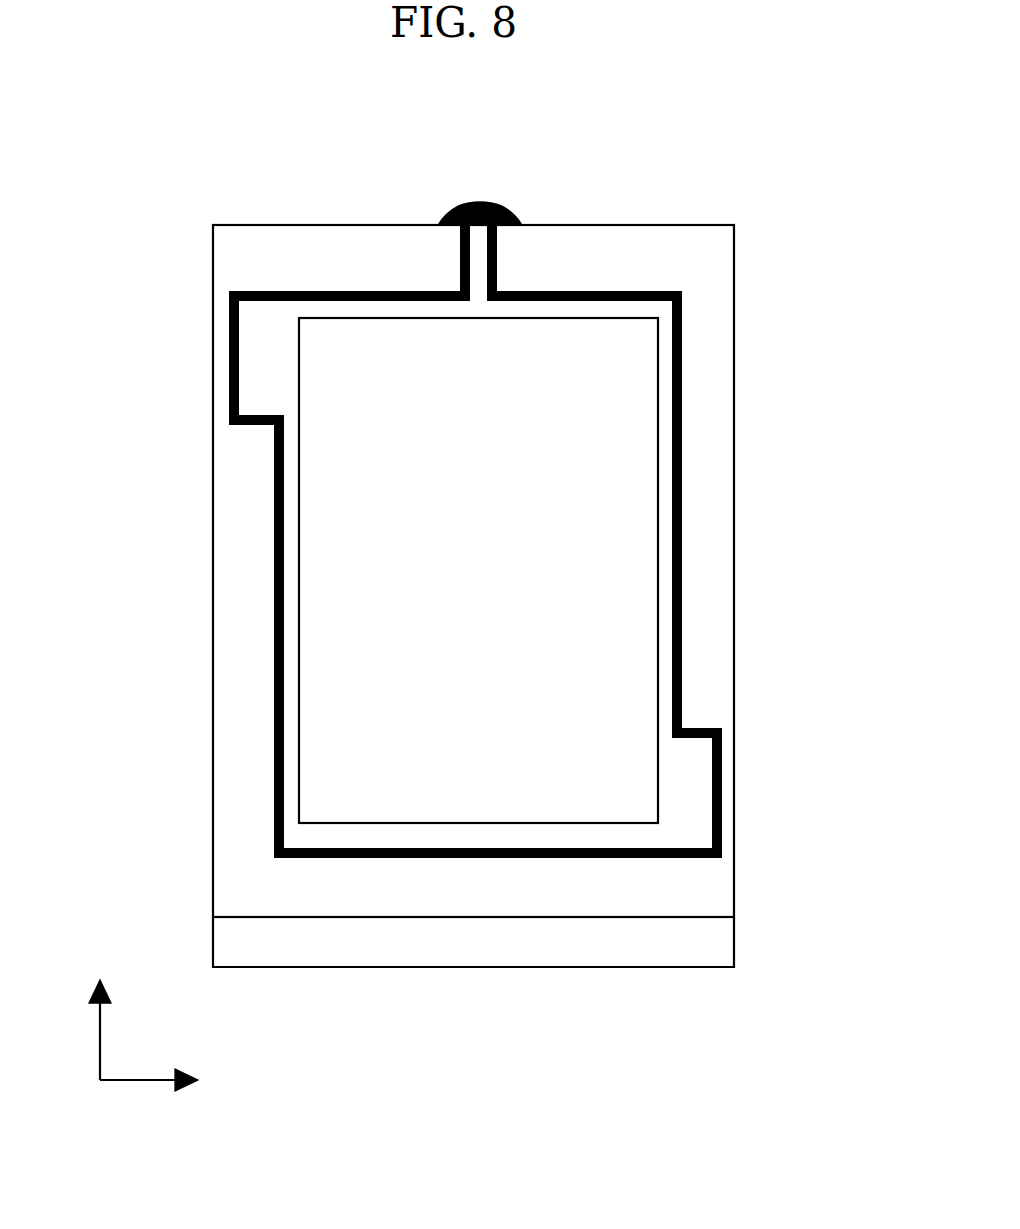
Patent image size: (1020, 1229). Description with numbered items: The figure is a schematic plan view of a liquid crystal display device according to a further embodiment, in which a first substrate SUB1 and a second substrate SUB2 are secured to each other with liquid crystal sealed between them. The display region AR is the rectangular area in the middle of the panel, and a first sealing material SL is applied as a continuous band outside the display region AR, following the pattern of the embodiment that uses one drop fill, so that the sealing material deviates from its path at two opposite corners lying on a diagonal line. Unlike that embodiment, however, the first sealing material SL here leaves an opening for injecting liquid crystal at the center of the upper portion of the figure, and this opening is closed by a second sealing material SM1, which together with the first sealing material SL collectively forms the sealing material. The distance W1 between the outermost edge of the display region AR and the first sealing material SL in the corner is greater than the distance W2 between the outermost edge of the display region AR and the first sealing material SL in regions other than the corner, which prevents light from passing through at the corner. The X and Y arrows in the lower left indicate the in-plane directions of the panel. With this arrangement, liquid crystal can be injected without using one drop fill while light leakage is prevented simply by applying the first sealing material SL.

The first sealing material SL is at (358, 290).
The second sealing material SM1 is at (483, 203).
The first substrate SUB1 is at (470, 940).
The second substrate SUB2 is at (680, 255).
The display region AR is at (330, 753).
The distance between the outermost edge of the display region and the first sealing W1 is at (352, 365).
The distance between the outermost edge of the display region and the first sealing W2 is at (352, 513).
The X direction X is at (165, 1085).
The Y direction Y is at (103, 1005).